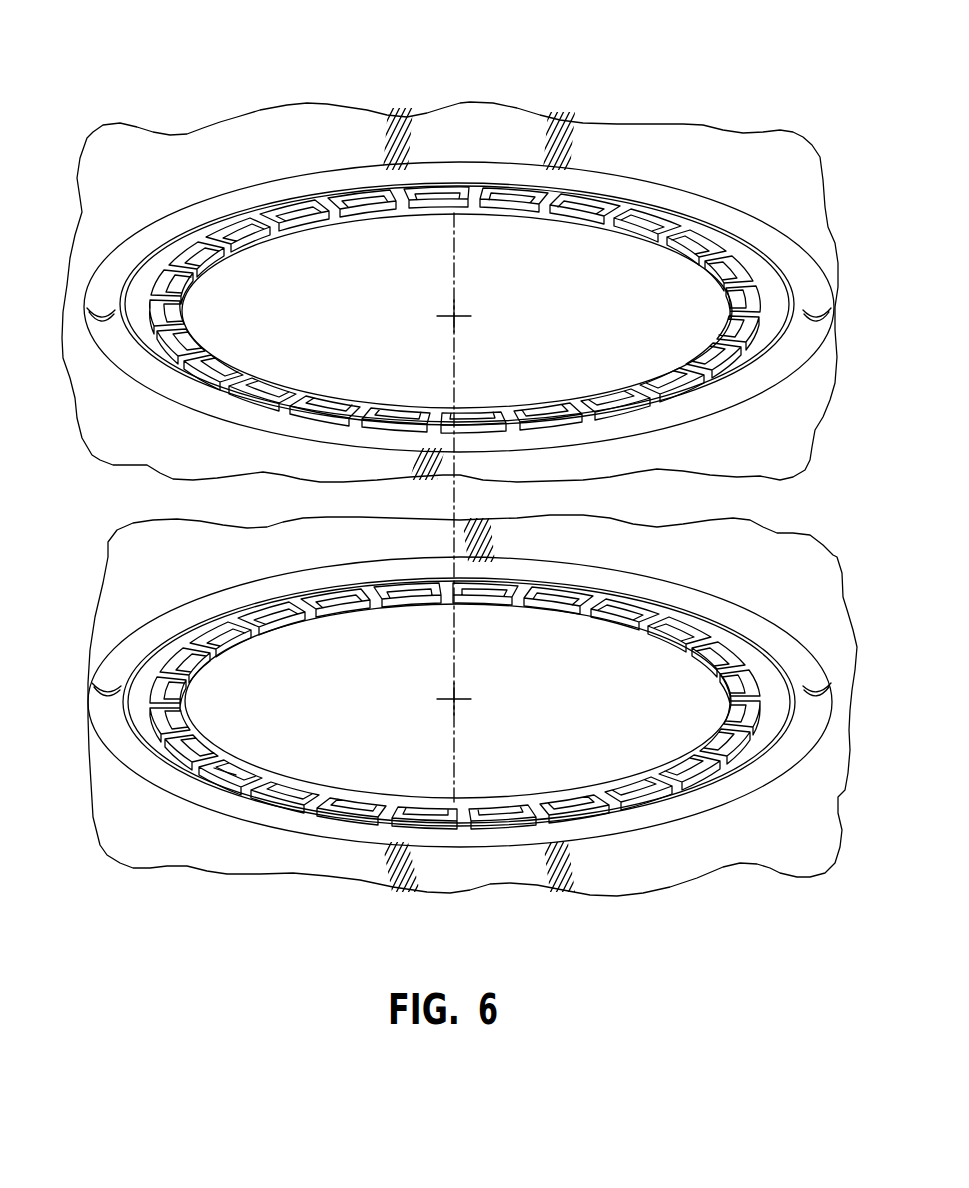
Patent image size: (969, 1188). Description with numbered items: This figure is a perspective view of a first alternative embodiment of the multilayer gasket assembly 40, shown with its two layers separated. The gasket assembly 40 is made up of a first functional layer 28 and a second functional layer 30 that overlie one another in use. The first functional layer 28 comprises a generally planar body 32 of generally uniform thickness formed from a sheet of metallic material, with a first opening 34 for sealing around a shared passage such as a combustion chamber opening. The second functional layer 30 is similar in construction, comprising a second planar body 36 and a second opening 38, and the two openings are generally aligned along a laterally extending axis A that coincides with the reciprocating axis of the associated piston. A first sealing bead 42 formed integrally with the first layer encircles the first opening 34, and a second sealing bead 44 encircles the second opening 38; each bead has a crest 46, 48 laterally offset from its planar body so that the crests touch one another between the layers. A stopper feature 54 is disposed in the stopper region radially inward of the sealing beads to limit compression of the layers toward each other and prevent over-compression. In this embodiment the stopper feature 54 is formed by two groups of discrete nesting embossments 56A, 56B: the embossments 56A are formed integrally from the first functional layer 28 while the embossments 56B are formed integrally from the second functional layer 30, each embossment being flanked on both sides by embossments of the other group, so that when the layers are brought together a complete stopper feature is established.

The first functional layer 28 is at (154, 876).
The second functional layer 30 is at (154, 124).
The planar body 32 is at (773, 865).
The first opening 34 is at (673, 643).
The second planar body 36 is at (773, 467).
The second opening 38 is at (217, 357).
The gasket assembly 40 is at (760, 78).
The first sealing bead 42 is at (160, 775).
The second sealing bead 44 is at (160, 397).
The crest 46 is at (108, 686).
The crest 48 is at (100, 324).
The stopper feature 54 is at (224, 764).
The discrete nesting embossments 56A is at (407, 573).
The discrete nesting embossments 56B is at (363, 217).
The axis A is at (455, 652).